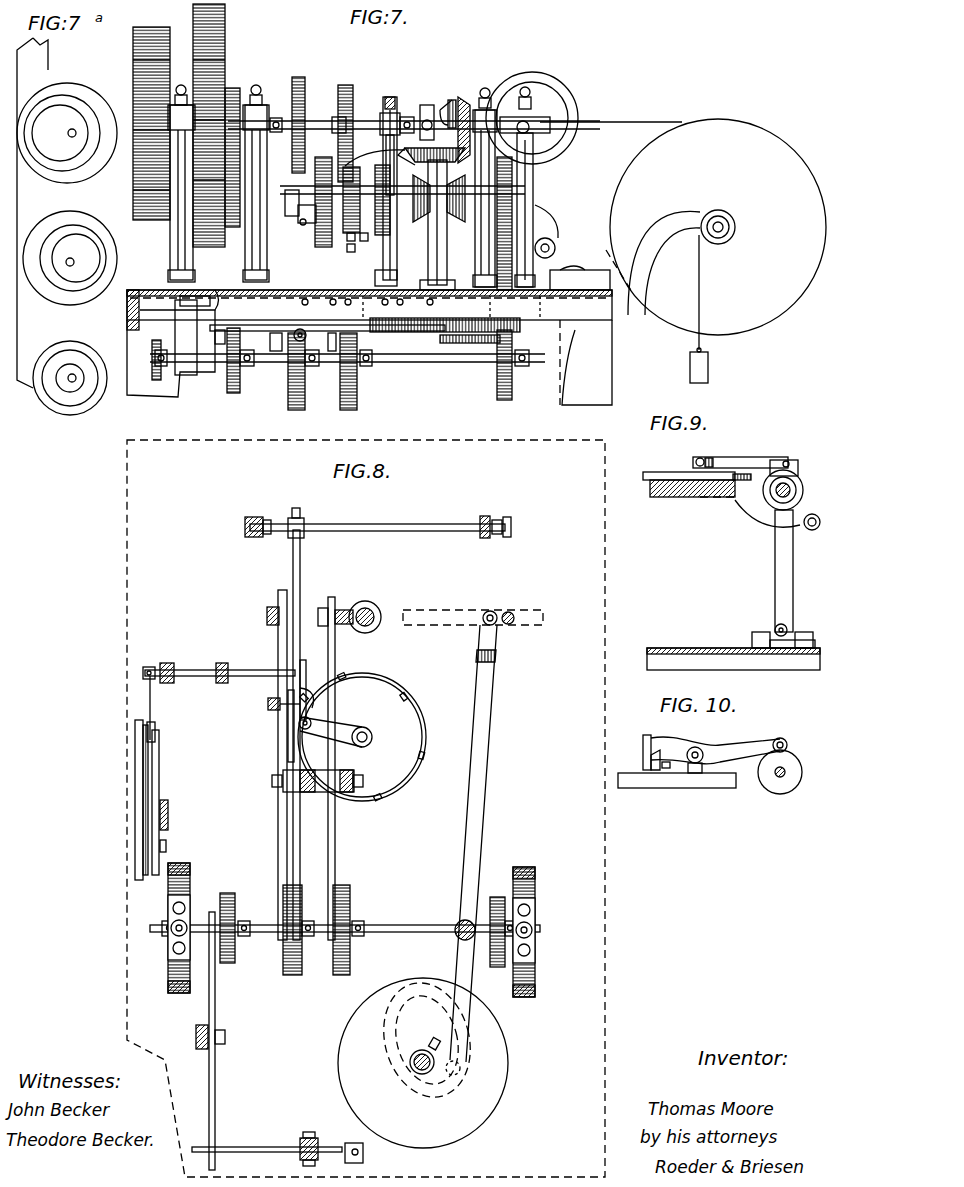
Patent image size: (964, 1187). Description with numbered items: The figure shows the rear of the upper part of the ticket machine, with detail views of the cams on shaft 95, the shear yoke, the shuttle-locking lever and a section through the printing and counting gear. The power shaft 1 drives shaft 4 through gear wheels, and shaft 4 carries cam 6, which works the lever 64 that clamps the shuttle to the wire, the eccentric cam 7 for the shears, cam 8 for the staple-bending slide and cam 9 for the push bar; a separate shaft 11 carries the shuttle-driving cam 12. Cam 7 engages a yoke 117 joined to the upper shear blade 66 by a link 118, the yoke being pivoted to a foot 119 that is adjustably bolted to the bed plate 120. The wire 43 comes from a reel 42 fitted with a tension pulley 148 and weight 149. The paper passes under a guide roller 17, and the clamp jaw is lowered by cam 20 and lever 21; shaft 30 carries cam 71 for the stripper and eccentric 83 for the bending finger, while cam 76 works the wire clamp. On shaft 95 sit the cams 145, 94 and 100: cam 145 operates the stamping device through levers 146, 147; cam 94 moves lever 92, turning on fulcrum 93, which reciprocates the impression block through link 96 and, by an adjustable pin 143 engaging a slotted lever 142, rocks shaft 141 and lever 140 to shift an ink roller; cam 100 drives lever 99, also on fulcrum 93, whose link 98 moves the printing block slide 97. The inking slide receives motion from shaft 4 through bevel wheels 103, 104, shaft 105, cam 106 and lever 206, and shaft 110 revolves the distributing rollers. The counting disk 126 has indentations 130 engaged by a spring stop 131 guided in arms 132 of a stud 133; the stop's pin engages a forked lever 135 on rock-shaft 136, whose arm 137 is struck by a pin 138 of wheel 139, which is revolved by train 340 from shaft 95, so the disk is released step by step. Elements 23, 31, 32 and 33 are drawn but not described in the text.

In FIG. 7, the power shaft 1 is at (133, 120).
In FIG. 7, the shaft 4 is at (262, 120).
In FIG. 9, the shaft 4 is at (776, 492).
In FIG. 10, the shaft 4 is at (776, 780).
In FIG. 7, the cam 6 is at (431, 107).
In FIG. 10, the cam 6 is at (795, 760).
In FIG. 7, the cam 7 is at (385, 103).
In FIG. 9, the cam 7 is at (792, 484).
In FIG. 7, the cam 8 is at (345, 122).
In FIG. 7, the cam 9 is at (298, 78).
In FIG. 7, the shaft 11 is at (526, 126).
In FIG. 7, the cam 12 is at (572, 108).
In FIG. 9, the guide roller 17 is at (813, 514).
In FIG. 7, the cam 20 is at (370, 231).
In FIG. 7, the lever 21 is at (356, 197).
In FIG. 7, the lever 23 is at (381, 162).
In FIG. 7, the shaft 30 is at (283, 188).
In FIG. 7, the gear 31 is at (325, 193).
In FIG. 7, the bearing 32 is at (303, 230).
In FIG. 7, the bracket 33 is at (302, 224).
In FIG. 7, the reel 42 is at (718, 227).
In FIG. 7, the wire 43 is at (611, 111).
In FIG. 7, the lever 64 is at (452, 100).
In FIG. 10, the lever 64 is at (668, 742).
In FIG. 9, the upper shear blade 66 is at (748, 476).
In FIG. 7, the cam 71 is at (356, 243).
In FIG. 7, the cam 76 is at (356, 229).
In FIG. 7, the eccentric 83 is at (390, 220).
In FIG. 7, the lever 92 is at (272, 341).
In FIG. 8, the lever 92 is at (278, 810).
In FIG. 8, the fulcrum 93 is at (340, 792).
In FIG. 7A, the cam 94 is at (70, 251).
In FIG. 7, the cam 94 is at (297, 377).
In FIG. 8, the cam 94 is at (292, 939).
In FIG. 7A, the shaft 95 is at (72, 256).
In FIG. 7, the shaft 95 is at (272, 365).
In FIG. 8, the shaft 95 is at (345, 922).
In FIG. 8, the link 96 is at (275, 612).
In FIG. 8, the slide 97 is at (368, 602).
In FIG. 8, the link 98 is at (333, 606).
In FIG. 7, the lever 99 is at (331, 352).
In FIG. 8, the lever 99 is at (306, 672).
In FIG. 7A, the cam 100 is at (67, 123).
In FIG. 7, the cam 100 is at (356, 377).
In FIG. 8, the cam 100 is at (343, 939).
In FIG. 7, the bevel wheel 103 is at (466, 100).
In FIG. 7, the bevel wheel 104 is at (431, 152).
In FIG. 7, the shaft 105 is at (432, 250).
In FIG. 8, the shaft 105 is at (410, 1062).
In FIG. 7, the cam 106 is at (445, 325).
In FIG. 8, the cam 106 is at (423, 1060).
In FIG. 7, the shaft 110 is at (378, 272).
In FIG. 7, the yoke 117 is at (400, 115).
In FIG. 9, the yoke 117 is at (792, 472).
In FIG. 7, the link 118 is at (392, 100).
In FIG. 9, the link 118 is at (726, 460).
In FIG. 9, the foot 119 is at (788, 633).
In FIG. 7, the bed plate 120 is at (369, 297).
In FIG. 9, the bed plate 120 is at (733, 649).
In FIG. 8, the disk 126 is at (422, 724).
In FIG. 8, the indentations 130 is at (380, 797).
In FIG. 8, the spring stop 131 is at (310, 718).
In FIG. 8, the arms 132 is at (340, 722).
In FIG. 8, the stud 133 is at (370, 733).
In FIG. 8, the forked lever 135 is at (313, 679).
In FIG. 8, the rock-shaft 136 is at (192, 670).
In FIG. 8, the arm 137 is at (148, 685).
In FIG. 8, the pin 138 is at (154, 725).
In FIG. 8, the wheel 139 is at (135, 745).
In FIG. 8, the lever 140 is at (485, 516).
In FIG. 8, the rock shaft 141 is at (375, 518).
In FIG. 8, the slotted lever 142 is at (307, 724).
In FIG. 8, the adjustable pin 143 is at (269, 698).
In FIG. 7A, the cam 145 is at (70, 367).
In FIG. 7, the cam 145 is at (226, 367).
In FIG. 8, the cam 145 is at (239, 934).
In FIG. 7, the lever 146 is at (200, 338).
In FIG. 8, the lever 146 is at (219, 1041).
In FIG. 7, the lever 147 is at (327, 322).
In FIG. 8, the lever 147 is at (277, 1148).
In FIG. 7, the tension pulley 148 is at (722, 235).
In FIG. 7, the weight 149 is at (716, 309).
In FIG. 7, the lever 206 is at (440, 342).
In FIG. 8, the lever 206 is at (473, 836).
In FIG. 8, the train 340 is at (142, 800).